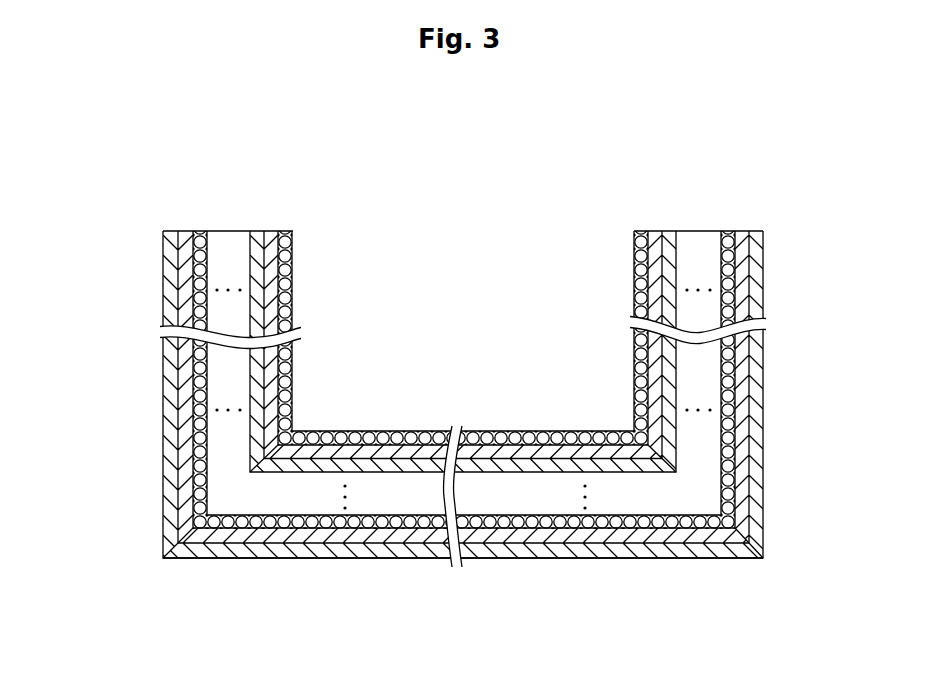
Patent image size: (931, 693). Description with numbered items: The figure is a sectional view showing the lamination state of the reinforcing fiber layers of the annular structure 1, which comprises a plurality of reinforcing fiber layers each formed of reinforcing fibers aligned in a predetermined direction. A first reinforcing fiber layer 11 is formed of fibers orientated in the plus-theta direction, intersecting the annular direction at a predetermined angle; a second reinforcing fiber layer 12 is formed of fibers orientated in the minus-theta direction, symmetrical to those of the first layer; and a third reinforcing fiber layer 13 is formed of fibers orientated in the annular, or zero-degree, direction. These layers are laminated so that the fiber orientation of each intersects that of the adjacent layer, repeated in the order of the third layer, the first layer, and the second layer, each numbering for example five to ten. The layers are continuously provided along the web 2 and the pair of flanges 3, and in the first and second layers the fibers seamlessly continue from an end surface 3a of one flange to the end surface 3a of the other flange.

The annular structure 1 is at (769, 191).
The web 2 is at (351, 569).
The flange 3 is at (152, 408).
The end surface 3a is at (223, 232).
The first reinforcing fiber layer 11 is at (187, 234).
The second reinforcing fiber layer 12 is at (168, 270).
The third reinforcing fiber layer 13 is at (202, 234).